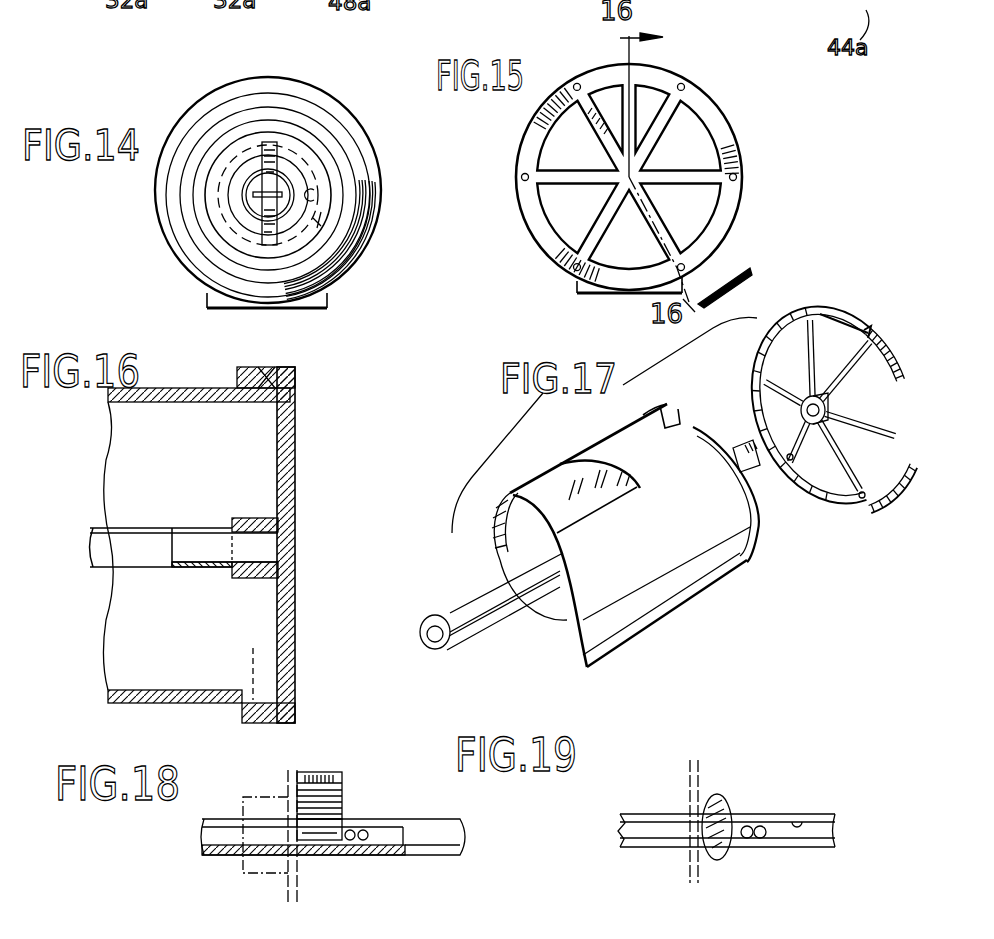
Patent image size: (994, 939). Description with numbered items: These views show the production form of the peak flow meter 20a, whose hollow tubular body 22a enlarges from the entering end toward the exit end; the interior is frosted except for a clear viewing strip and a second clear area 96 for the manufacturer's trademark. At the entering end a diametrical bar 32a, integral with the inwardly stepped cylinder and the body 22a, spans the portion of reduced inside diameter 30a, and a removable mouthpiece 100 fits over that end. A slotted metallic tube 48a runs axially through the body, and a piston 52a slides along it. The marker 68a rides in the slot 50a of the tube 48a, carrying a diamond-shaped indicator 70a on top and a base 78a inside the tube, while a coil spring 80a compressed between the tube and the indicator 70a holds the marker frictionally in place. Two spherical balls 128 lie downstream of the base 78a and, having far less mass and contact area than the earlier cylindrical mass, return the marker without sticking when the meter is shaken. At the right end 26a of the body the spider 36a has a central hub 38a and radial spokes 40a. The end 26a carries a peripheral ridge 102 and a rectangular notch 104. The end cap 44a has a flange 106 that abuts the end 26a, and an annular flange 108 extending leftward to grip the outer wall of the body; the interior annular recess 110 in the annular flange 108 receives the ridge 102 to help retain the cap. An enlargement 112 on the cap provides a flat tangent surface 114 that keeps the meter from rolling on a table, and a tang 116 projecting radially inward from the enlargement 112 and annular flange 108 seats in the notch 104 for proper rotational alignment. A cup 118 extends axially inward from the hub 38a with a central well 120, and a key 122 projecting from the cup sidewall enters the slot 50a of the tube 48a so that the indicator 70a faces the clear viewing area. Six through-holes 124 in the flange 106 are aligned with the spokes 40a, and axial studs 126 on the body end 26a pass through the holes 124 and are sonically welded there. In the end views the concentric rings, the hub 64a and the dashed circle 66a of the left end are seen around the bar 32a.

In FIG. 16, the peak flow meter 20a is at (133, 702).
In FIG. 17, the peak flow meter 20a is at (692, 605).
In FIG. 14, the body 22a is at (160, 189).
In FIG. 17, the body 22a is at (620, 645).
In FIG. 16, the right end of the body 26a is at (290, 378).
In FIG. 17, the right end of the body 26a is at (752, 567).
In FIG. 14, the portion of reduced inside diameter 30a is at (318, 200).
In FIG. 14, the diametrical bar 32a is at (272, 152).
In FIG. 15, the spider 36a is at (560, 195).
In FIG. 16, the spider 36a is at (308, 600).
In FIG. 15, the central hub 38a is at (608, 164).
In FIG. 16, the central hub 38a is at (290, 523).
In FIG. 15, the arms or spokes 40a is at (691, 171).
In FIG. 16, the arms or spokes 40a is at (290, 447).
In FIG. 17, the arms or spokes 40a is at (862, 430).
In FIG. 15, the end cap 44a is at (743, 157).
In FIG. 17, the end cap 44a is at (849, 520).
In FIG. 16, the tube 48a is at (147, 533).
In FIG. 17, the tube 48a is at (445, 613).
In FIG. 18, the tube 48a is at (442, 822).
In FIG. 19, the tube 48a is at (760, 814).
In FIG. 16, the slit or slot 50a is at (208, 527).
In FIG. 17, the slit or slot 50a is at (433, 643).
In FIG. 18, the slit or slot 50a is at (400, 820).
In FIG. 19, the slit or slot 50a is at (800, 822).
In FIG. 14, the piston 52a is at (342, 230).
In FIG. 18, the piston 52a is at (283, 784).
In FIG. 19, the piston 52a is at (683, 781).
In FIG. 14, the hub 64a is at (294, 187).
In FIG. 14, the dashed circle 66a is at (253, 198).
In FIG. 18, the marker 68a is at (355, 768).
In FIG. 19, the marker 68a is at (730, 864).
In FIG. 18, the indicator 70a is at (322, 774).
In FIG. 19, the indicator 70a is at (716, 794).
In FIG. 18, the base of the marker 78a is at (326, 832).
In FIG. 18, the coil spring 80a is at (345, 826).
In FIG. 17, the clear area 96 is at (547, 495).
In FIG. 14, the mouthpiece 100 is at (300, 236).
In FIG. 16, the peripheral ridge 102 is at (272, 398).
In FIG. 17, the peripheral ridge 102 is at (707, 425).
In FIG. 16, the rectangular notch 104 is at (230, 664).
In FIG. 17, the rectangular notch 104 is at (681, 410).
In FIG. 15, the flange 106 is at (722, 222).
In FIG. 16, the flange 106 is at (290, 410).
In FIG. 17, the flange 106 is at (780, 318).
In FIG. 14, the annular flange 108 is at (380, 186).
In FIG. 16, the annular flange 108 is at (250, 370).
In FIG. 17, the annular flange 108 is at (755, 392).
In FIG. 16, the interior annular recess 110 is at (268, 372).
In FIG. 14, the projection or enlargement 112 is at (207, 293).
In FIG. 15, the projection or enlargement 112 is at (574, 283).
In FIG. 17, the projection or enlargement 112 is at (860, 326).
In FIG. 14, the flat tangent surface 114 is at (212, 308).
In FIG. 15, the flat tangent surface 114 is at (593, 294).
In FIG. 16, the flat tangent surface 114 is at (260, 723).
In FIG. 17, the flat tangent surface 114 is at (822, 312).
In FIG. 16, the tang 116 is at (297, 689).
In FIG. 17, the tang 116 is at (840, 312).
In FIG. 17, the cup 118 is at (822, 428).
In FIG. 17, the central well or opening 120 is at (808, 394).
In FIG. 17, the key 122 is at (840, 407).
In FIG. 15, the through-holes 124 is at (577, 83).
In FIG. 17, the through-holes 124 is at (791, 462).
In FIG. 15, the studs 126 is at (687, 92).
In FIG. 17, the studs 126 is at (768, 534).
In FIG. 18, the spherical balls 128 is at (360, 842).
In FIG. 19, the spherical balls 128 is at (755, 840).